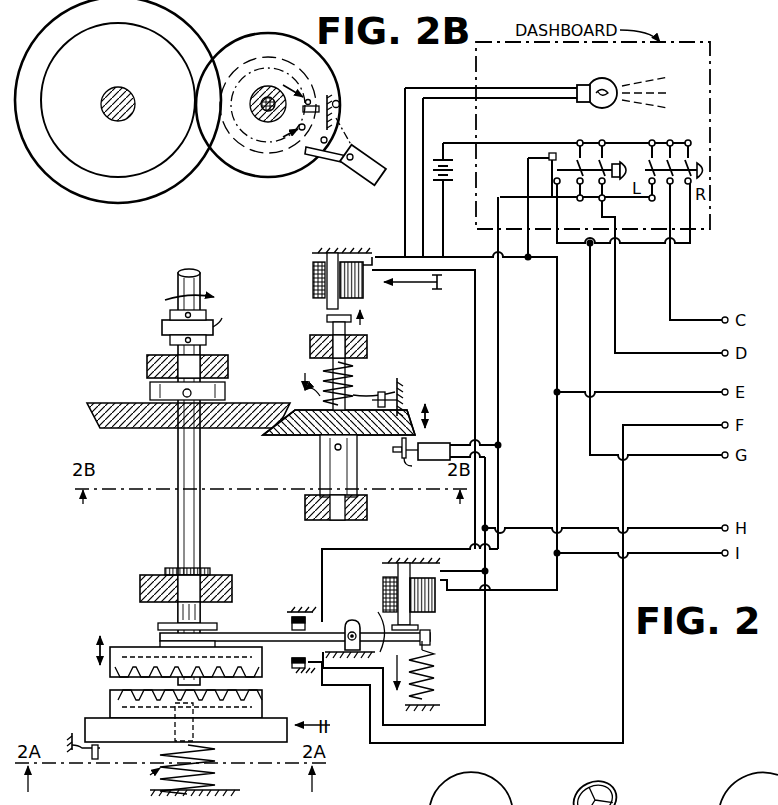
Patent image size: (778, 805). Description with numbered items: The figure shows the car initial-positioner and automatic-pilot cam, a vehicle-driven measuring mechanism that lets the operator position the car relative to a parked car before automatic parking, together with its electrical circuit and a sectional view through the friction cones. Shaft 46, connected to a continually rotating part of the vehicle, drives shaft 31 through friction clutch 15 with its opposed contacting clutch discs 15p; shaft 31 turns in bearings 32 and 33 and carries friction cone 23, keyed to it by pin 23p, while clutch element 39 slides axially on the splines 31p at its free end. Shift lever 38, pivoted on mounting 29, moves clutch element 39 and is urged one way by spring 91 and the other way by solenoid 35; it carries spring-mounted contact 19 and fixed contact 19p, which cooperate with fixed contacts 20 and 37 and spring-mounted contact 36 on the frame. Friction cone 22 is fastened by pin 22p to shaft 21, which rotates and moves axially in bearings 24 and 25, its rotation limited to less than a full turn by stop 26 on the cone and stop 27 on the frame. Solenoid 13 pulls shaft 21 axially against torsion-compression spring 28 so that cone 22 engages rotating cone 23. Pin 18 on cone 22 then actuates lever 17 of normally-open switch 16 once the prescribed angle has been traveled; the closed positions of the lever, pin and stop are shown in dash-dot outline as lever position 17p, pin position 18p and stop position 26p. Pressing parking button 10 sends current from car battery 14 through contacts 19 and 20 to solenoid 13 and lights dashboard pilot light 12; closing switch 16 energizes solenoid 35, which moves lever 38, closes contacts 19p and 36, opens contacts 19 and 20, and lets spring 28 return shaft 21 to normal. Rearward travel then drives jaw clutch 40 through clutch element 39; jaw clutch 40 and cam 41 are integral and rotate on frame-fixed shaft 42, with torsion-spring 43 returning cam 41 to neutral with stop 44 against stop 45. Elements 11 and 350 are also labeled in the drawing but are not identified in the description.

In FIG. 2, the parking button 10 is at (700, 162).
In FIG. 2, the switch knob 11 is at (618, 163).
In FIG. 2, the dashboard pilot light 12 is at (604, 80).
In FIG. 2, the solenoid 13 is at (358, 282).
In FIG. 2, the car battery 14 is at (455, 172).
In FIG. 2, the friction clutch 15 is at (162, 327).
In FIG. 2, the clutch discs 15p is at (231, 312).
In FIG. 2B, the momentary-contact switch 16 is at (363, 154).
In FIG. 2, the momentary-contact switch 16 is at (443, 441).
In FIG. 2B, the switch lever 17 is at (320, 160).
In FIG. 2, the switch lever 17 is at (393, 450).
In FIG. 2B, the lever closed position 17p is at (348, 130).
In FIG. 2B, the pin 18 is at (338, 102).
In FIG. 2, the pin 18 is at (406, 470).
In FIG. 2B, the pin closed position 18p is at (276, 157).
In FIG. 2, the spring-mounted contact 19 is at (290, 616).
In FIG. 2, the fixed contact 19p is at (292, 630).
In FIG. 2, the fixed contact 20 is at (297, 606).
In FIG. 2B, the shaft 21 is at (262, 113).
In FIG. 2, the shaft 21 is at (327, 318).
In FIG. 2B, the friction cone 22 is at (240, 46).
In FIG. 2, the friction cone 22 is at (298, 408).
In FIG. 2, the pin 22p is at (334, 447).
In FIG. 2B, the friction cone 23 is at (58, 36).
In FIG. 2, the friction cone 23 is at (265, 402).
In FIG. 2, the pin 23p is at (183, 393).
In FIG. 2, the bearing 24 is at (310, 345).
In FIG. 2, the bearing 25 is at (305, 510).
In FIG. 2B, the stop 26 is at (280, 80).
In FIG. 2, the stop 26 is at (375, 396).
In FIG. 2B, the stop closed position 26p is at (281, 133).
In FIG. 2B, the stop 27 is at (319, 87).
In FIG. 2, the stop 27 is at (400, 392).
In FIG. 2, the torsion-compression spring 28 is at (352, 396).
In FIG. 2, the mounting 29 is at (356, 622).
In FIG. 2B, the shaft 31 is at (112, 114).
In FIG. 2, the shaft 31 is at (178, 497).
In FIG. 2, the splines 31p is at (178, 612).
In FIG. 2, the bearing 32 is at (147, 363).
In FIG. 2, the bearing 33 is at (140, 580).
In FIG. 2, the solenoid 35 is at (435, 602).
In FIG. 2, the spring-mounted contact 36 is at (292, 664).
In FIG. 2, the fixed contact 37 is at (291, 689).
In FIG. 2, the shift lever 38 is at (232, 633).
In FIG. 2, the clutch element 39 is at (118, 648).
In FIG. 2, the jaw clutch 40 is at (110, 700).
In FIG. 2, the cam 41 is at (85, 725).
In FIG. 2, the shaft 42 is at (193, 735).
In FIG. 2, the torsion-spring 43 is at (215, 770).
In FIG. 2, the stop 44 is at (97, 760).
In FIG. 2, the stop 45 is at (72, 745).
In FIG. 2, the shaft 46 is at (183, 279).
In FIG. 2, the spring 91 is at (432, 680).
In FIG. 2, the wheel 350 is at (486, 788).